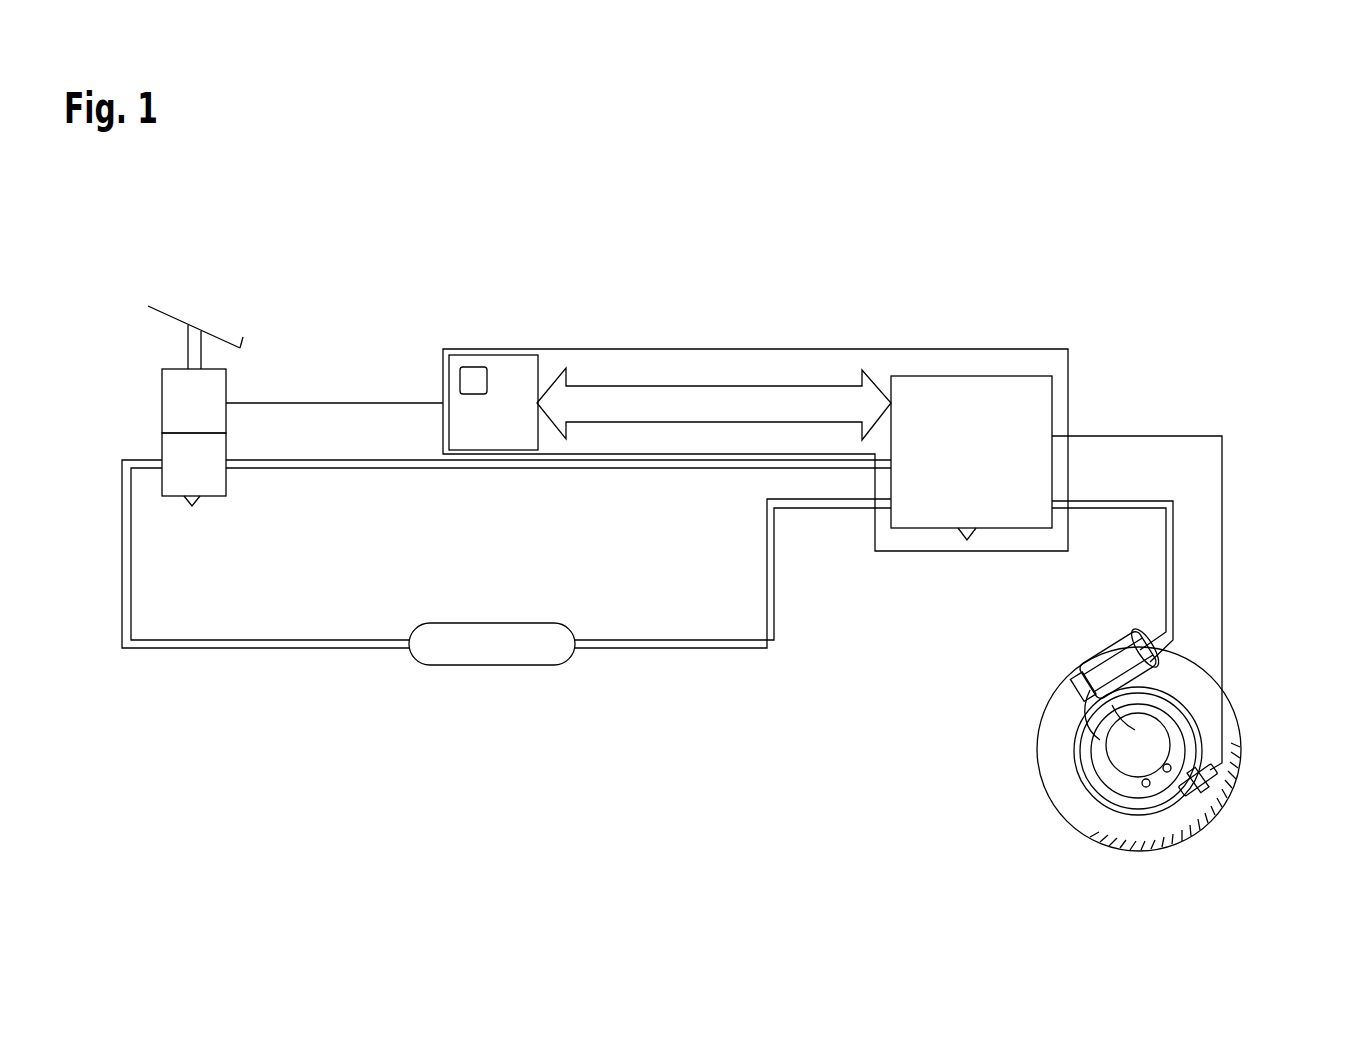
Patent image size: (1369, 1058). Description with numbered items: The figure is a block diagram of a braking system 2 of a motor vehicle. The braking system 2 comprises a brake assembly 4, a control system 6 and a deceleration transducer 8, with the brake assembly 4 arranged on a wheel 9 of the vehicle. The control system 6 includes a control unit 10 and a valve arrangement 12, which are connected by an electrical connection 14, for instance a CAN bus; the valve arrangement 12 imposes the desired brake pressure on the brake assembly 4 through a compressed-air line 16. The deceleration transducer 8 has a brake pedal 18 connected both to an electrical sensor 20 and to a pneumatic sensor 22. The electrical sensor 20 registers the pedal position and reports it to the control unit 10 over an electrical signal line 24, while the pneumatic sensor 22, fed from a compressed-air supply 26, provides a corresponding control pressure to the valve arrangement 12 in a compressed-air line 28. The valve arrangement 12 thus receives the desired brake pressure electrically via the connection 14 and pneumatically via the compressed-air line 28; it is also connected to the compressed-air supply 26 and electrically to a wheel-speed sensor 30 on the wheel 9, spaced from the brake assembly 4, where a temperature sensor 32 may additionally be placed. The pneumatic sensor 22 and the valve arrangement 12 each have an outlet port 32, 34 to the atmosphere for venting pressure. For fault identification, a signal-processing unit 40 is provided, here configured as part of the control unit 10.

The braking system 2 is at (795, 247).
The brake assembly 4 is at (1058, 649).
The control system 6 is at (597, 349).
The deceleration transducer 8 is at (212, 298).
The wheel 9 is at (1045, 790).
The control unit 10 is at (490, 355).
The valve arrangement 12 is at (957, 376).
The electrical connection 14 is at (707, 386).
The compressed-air line 16 is at (1102, 509).
The brake pedal 18 is at (172, 318).
The electrical sensor 20 is at (162, 401).
The pneumatic sensor 22 is at (162, 440).
The electrical signal line 24 is at (340, 403).
The compressed-air supply 26 is at (492, 665).
The compressed-air line 28 is at (660, 470).
The wheel-speed sensor 30 is at (1207, 782).
The temperature sensor 32 is at (192, 506).
The outlet port 34 is at (967, 540).
The signal-processing unit 40 is at (470, 367).